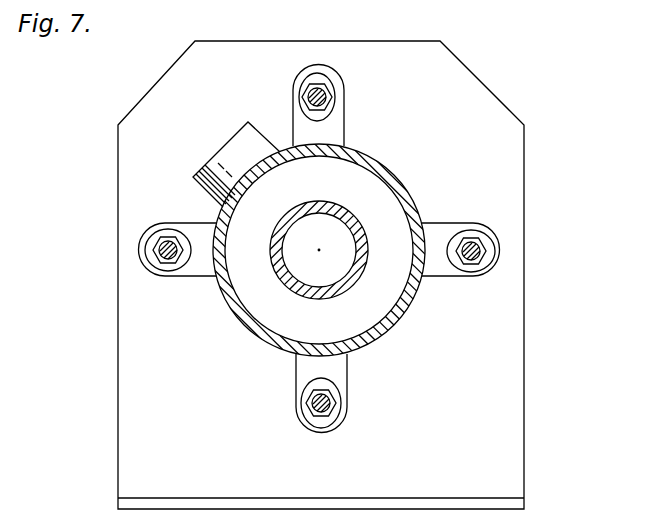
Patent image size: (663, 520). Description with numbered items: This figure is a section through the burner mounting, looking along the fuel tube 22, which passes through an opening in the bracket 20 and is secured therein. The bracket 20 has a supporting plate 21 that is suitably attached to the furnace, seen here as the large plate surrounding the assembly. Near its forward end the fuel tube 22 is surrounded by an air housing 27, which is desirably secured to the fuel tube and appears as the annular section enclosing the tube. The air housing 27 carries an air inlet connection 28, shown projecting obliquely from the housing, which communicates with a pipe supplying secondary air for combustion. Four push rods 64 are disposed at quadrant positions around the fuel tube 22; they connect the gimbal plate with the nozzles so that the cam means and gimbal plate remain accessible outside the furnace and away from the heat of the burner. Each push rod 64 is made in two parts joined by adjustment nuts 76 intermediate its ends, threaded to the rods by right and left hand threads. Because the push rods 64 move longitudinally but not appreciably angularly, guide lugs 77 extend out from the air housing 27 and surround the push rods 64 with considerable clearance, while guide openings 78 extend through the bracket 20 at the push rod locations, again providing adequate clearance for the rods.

The bracket 20 is at (508, 345).
The supporting plate 21 is at (526, 503).
The fuel tube 22 is at (362, 241).
The air housing 27 is at (393, 180).
The air inlet connection 28 is at (226, 155).
The push rods 64 is at (326, 99).
The adjustment nuts 76 is at (308, 80).
The guide lugs 77 is at (338, 86).
The guide openings 78 is at (482, 234).